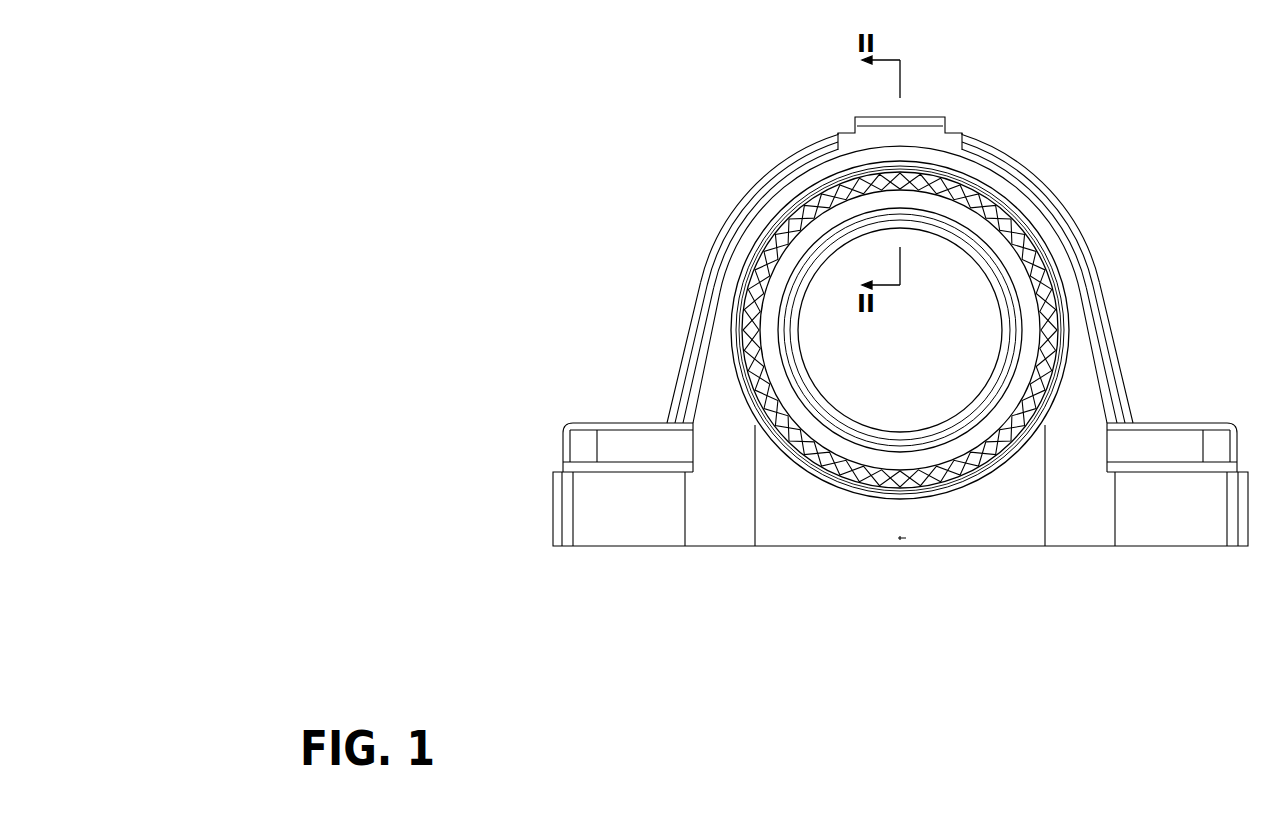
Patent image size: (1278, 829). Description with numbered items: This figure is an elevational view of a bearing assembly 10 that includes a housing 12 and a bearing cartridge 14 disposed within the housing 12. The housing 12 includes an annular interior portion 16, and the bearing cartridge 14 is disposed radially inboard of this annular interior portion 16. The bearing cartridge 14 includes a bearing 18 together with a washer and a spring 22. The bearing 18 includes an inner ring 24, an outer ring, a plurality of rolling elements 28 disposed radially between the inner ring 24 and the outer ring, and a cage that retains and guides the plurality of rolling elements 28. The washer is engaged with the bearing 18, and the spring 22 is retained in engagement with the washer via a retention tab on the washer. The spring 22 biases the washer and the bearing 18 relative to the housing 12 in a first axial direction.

The bearing assembly 10 is at (1037, 110).
The housing 12 is at (1036, 180).
The bearing cartridge 14 is at (960, 208).
The annular interior portion 16 is at (808, 195).
The bearing 18 is at (1036, 260).
The spring 22 is at (1061, 293).
The inner ring 24 is at (896, 230).
The rolling elements 28 is at (757, 300).